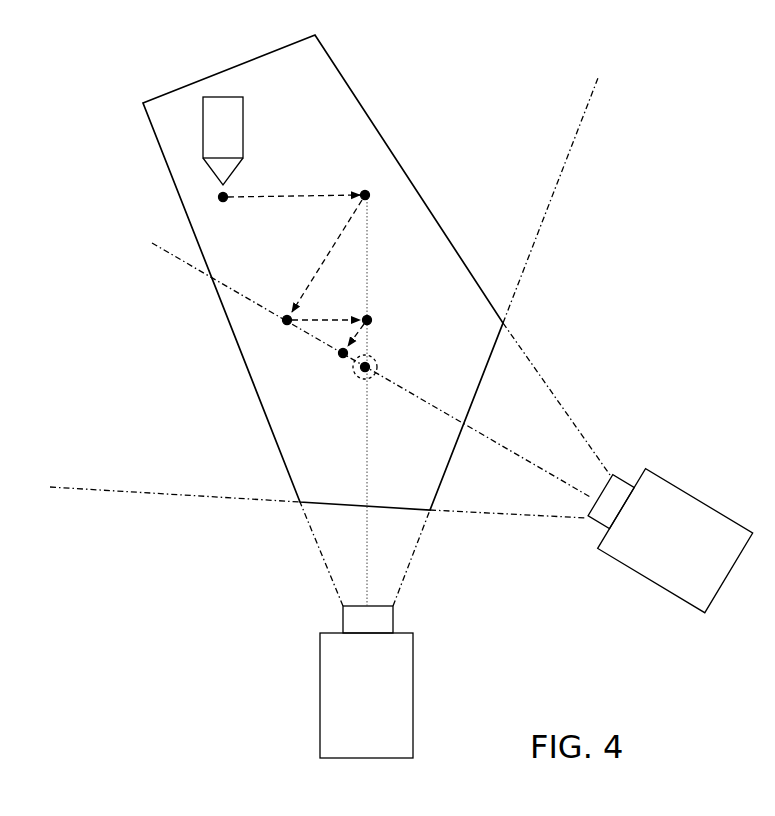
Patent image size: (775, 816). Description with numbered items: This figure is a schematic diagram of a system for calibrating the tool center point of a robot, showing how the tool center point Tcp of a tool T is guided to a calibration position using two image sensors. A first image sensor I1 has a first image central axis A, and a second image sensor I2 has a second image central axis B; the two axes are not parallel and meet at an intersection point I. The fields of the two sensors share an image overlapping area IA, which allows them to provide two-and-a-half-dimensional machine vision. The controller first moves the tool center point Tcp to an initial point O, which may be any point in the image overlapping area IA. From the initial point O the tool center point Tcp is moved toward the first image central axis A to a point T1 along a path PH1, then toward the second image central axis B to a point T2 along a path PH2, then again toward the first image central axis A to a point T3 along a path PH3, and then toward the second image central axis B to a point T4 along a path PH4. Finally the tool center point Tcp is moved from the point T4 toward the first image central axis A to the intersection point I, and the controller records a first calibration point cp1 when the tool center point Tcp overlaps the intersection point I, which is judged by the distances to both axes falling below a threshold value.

The image overlapping area IA is at (412, 220).
The first image sensor I1 is at (397, 688).
The second image sensor I2 is at (660, 493).
The first image central axis A is at (367, 486).
The second image central axis B is at (474, 430).
The tool T is at (227, 122).
The tool center point Tcp is at (223, 183).
The initial point O is at (212, 198).
The path PH1 is at (297, 197).
The path PH2 is at (315, 278).
The path PH3 is at (313, 319).
The path PH4 is at (370, 326).
The point T1 is at (367, 193).
The point T2 is at (283, 320).
The point T3 is at (369, 318).
The point T4 is at (340, 354).
The first calibration point cp1 is at (353, 372).
The intersection point I is at (374, 360).